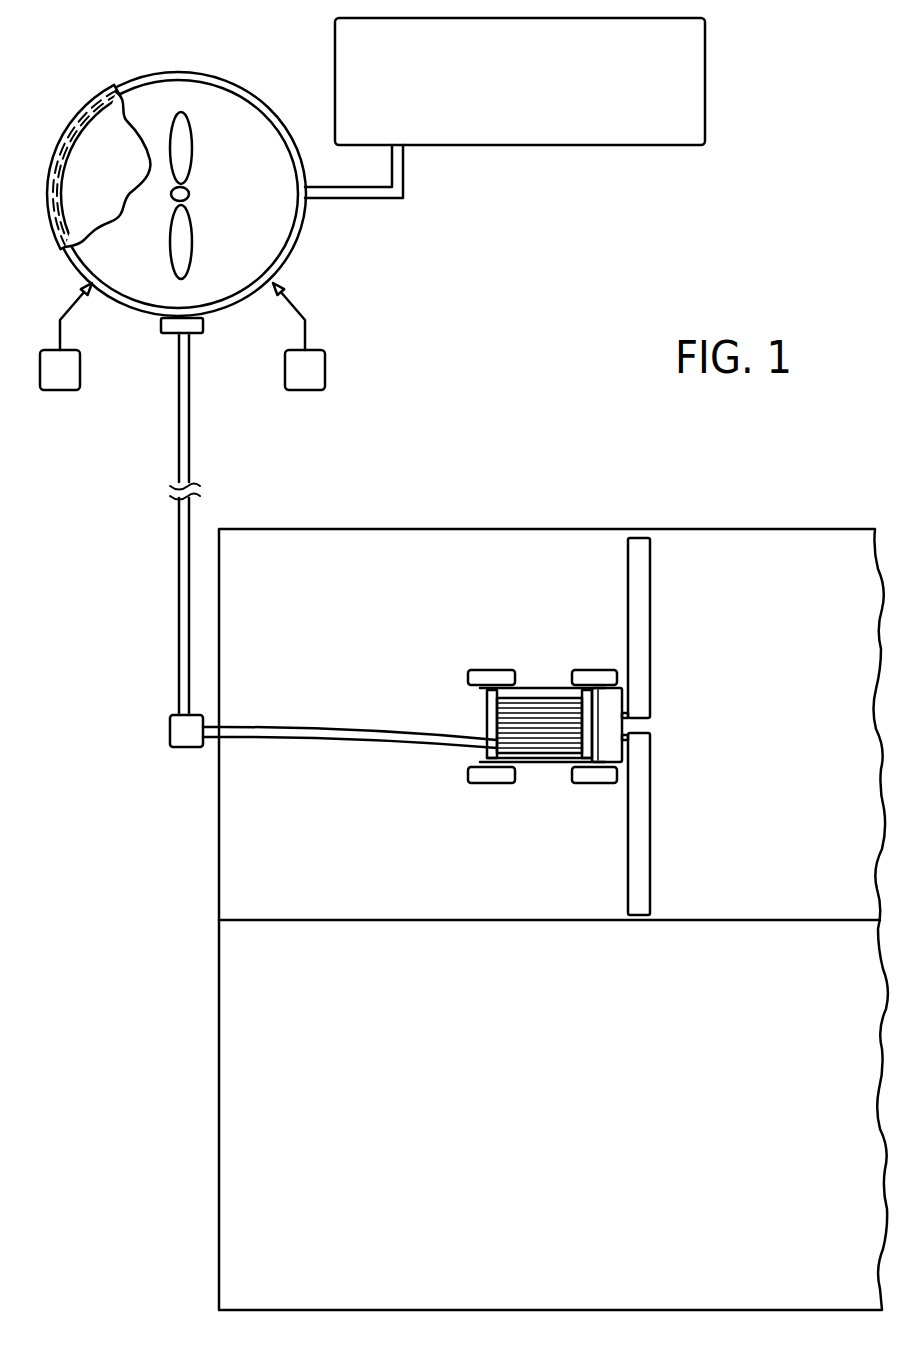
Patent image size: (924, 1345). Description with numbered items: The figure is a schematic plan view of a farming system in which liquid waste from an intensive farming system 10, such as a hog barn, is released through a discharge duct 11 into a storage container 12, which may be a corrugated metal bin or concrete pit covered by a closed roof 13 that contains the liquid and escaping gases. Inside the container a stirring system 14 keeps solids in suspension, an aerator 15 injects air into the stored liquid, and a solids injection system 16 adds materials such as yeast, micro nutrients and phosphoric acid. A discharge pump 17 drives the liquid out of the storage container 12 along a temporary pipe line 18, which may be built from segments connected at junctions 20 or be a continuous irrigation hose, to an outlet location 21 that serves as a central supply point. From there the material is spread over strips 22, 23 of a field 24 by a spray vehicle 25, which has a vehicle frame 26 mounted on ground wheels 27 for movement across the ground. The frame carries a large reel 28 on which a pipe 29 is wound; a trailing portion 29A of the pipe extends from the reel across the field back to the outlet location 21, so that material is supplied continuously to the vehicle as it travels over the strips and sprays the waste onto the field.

The intensive farming system 10 is at (602, 150).
The discharge duct 11 is at (367, 201).
The storage container 12 is at (301, 244).
The closed roof 13 is at (94, 142).
The stirring system 14 is at (192, 147).
The aerator 15 is at (323, 367).
The solids injection system 16 is at (70, 390).
The discharge pump 17 is at (196, 328).
The temporary pipe line 18 is at (190, 462).
The junctions 20 is at (178, 430).
The outlet location 21 is at (177, 733).
The strip of field 22 is at (770, 557).
The strip of field 23 is at (758, 942).
The field 24 is at (559, 518).
The spray vehicle 25 is at (672, 714).
The vehicle frame 26 is at (550, 686).
The ground wheels 27 is at (477, 677).
The reel 28 is at (547, 762).
The pipe 29 is at (503, 720).
The trailing portion 29A is at (358, 740).